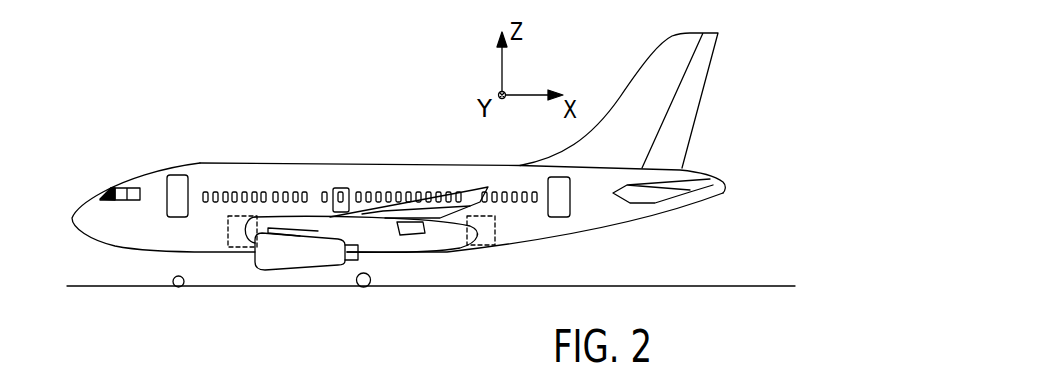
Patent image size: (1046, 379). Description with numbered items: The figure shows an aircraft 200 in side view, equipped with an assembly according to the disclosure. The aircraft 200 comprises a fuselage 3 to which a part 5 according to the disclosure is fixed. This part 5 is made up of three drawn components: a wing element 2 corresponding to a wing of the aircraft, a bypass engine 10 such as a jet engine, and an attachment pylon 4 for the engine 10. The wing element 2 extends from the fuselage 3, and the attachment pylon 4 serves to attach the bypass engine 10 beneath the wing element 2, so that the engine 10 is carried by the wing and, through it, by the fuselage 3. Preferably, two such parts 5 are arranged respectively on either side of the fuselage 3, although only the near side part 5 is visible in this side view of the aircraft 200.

The aircraft 200 is at (323, 112).
The fuselage 3 is at (227, 182).
The wing element 2 is at (362, 222).
The attachment pylon 4 is at (318, 231).
The part 5 is at (250, 267).
The bypass engine 10 is at (303, 262).